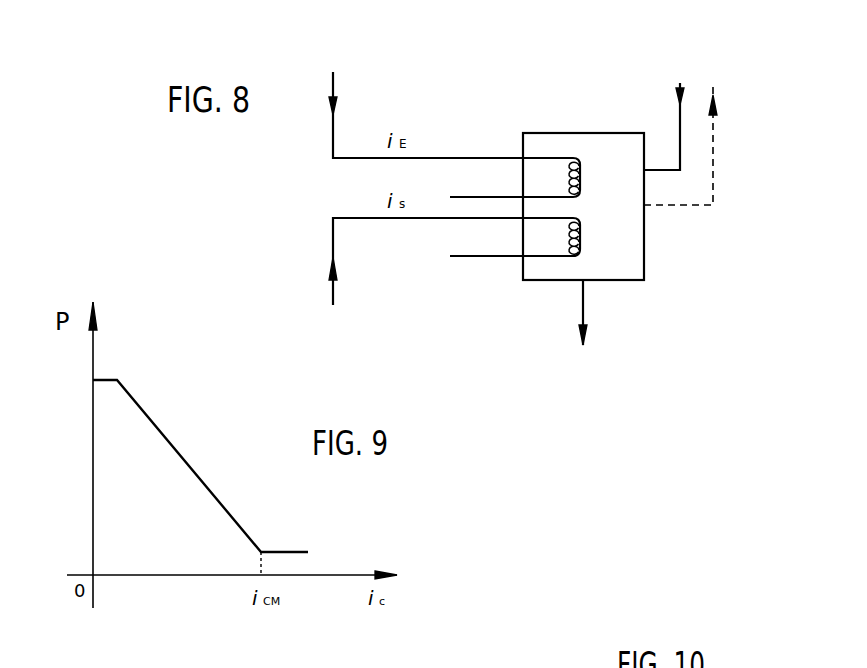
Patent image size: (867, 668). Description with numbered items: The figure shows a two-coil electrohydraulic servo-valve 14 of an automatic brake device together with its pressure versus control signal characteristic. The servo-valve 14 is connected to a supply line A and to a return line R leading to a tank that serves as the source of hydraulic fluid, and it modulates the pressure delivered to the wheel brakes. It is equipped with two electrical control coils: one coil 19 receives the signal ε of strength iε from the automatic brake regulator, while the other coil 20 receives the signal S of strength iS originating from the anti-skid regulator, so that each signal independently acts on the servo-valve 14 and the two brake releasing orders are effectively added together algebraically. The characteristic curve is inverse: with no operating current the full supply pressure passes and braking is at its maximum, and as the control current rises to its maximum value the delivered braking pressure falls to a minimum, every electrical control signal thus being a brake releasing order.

The electrohydraulic servo-valve 14 is at (622, 265).
The electrical control coil 19 is at (571, 158).
The electrical control coil 20 is at (570, 258).